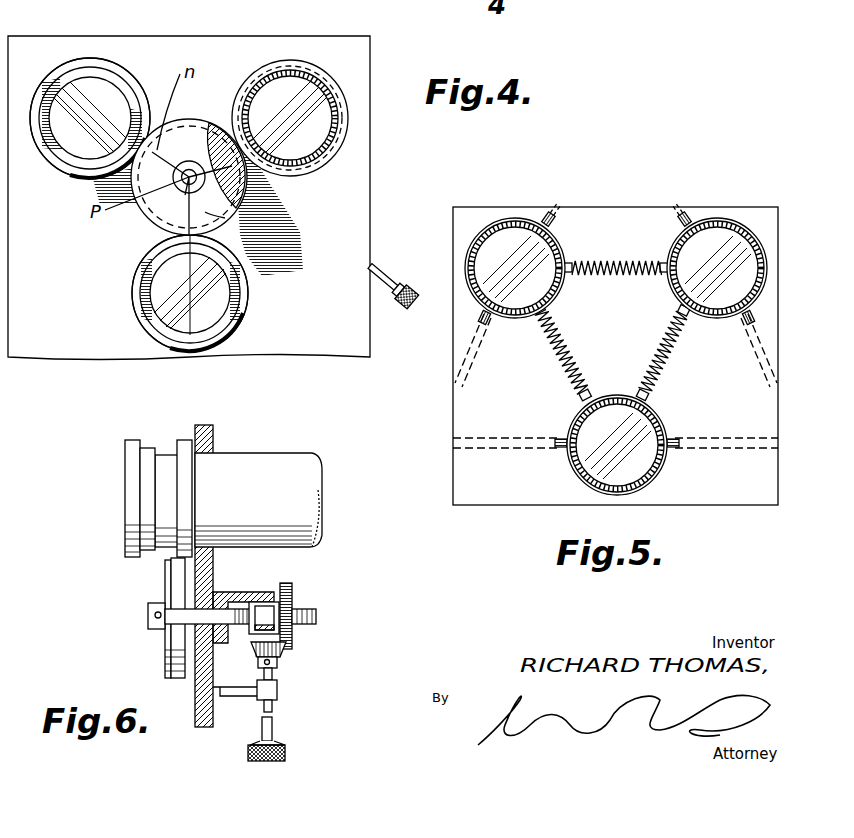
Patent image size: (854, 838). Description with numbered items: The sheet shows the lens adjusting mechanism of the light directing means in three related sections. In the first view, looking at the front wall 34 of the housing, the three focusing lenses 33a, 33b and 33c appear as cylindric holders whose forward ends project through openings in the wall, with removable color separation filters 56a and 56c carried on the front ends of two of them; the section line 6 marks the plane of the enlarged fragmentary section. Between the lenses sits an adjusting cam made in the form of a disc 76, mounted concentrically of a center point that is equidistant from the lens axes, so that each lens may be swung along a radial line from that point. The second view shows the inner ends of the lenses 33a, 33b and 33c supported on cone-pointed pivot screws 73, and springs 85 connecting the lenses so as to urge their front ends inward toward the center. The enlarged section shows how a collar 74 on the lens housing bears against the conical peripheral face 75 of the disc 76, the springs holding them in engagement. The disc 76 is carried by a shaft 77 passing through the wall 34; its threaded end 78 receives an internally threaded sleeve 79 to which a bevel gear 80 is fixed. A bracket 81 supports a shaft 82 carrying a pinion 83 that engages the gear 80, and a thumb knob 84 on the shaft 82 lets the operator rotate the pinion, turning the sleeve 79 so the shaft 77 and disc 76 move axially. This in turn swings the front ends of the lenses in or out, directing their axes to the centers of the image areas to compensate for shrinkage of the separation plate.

In FIG. 4, the focusing lens 33a is at (80, 60).
In FIG. 5, the focusing lens 33a is at (524, 226).
In FIG. 6, the focusing lens 33a is at (300, 470).
In FIG. 4, the focusing lens 33b is at (332, 93).
In FIG. 5, the focusing lens 33b is at (720, 222).
In FIG. 4, the focusing lens 33c is at (247, 295).
In FIG. 5, the focusing lens 33c is at (580, 472).
In FIG. 4, the front wall 34 is at (345, 198).
In FIG. 6, the front wall 34 is at (213, 433).
In FIG. 4, the filter 56a is at (100, 72).
In FIG. 6, the filter 56a is at (125, 490).
In FIG. 4, the filter 56c is at (163, 332).
In FIG. 5, the cone-pointed pivot screw 73 is at (548, 228).
In FIG. 6, the collar 74 is at (185, 440).
In FIG. 6, the conical peripheral face 75 is at (175, 585).
In FIG. 4, the adjusting cam disc 76 is at (216, 212).
In FIG. 6, the adjusting cam disc 76 is at (166, 645).
In FIG. 6, the shaft 77 is at (240, 609).
In FIG. 6, the threaded end 78 is at (300, 610).
In FIG. 6, the internally threaded sleeve 79 is at (263, 605).
In FIG. 6, the bevel gear 80 is at (288, 650).
In FIG. 6, the bracket 81 is at (278, 690).
In FIG. 4, the shaft 82 is at (387, 287).
In FIG. 6, the shaft 82 is at (273, 706).
In FIG. 6, the pinion 83 is at (280, 662).
In FIG. 4, the thumb knob 84 is at (411, 287).
In FIG. 6, the thumb knob 84 is at (286, 752).
In FIG. 5, the spring 85 is at (610, 262).
In FIG. 4, the section line 6— 6 is at (128, 142).